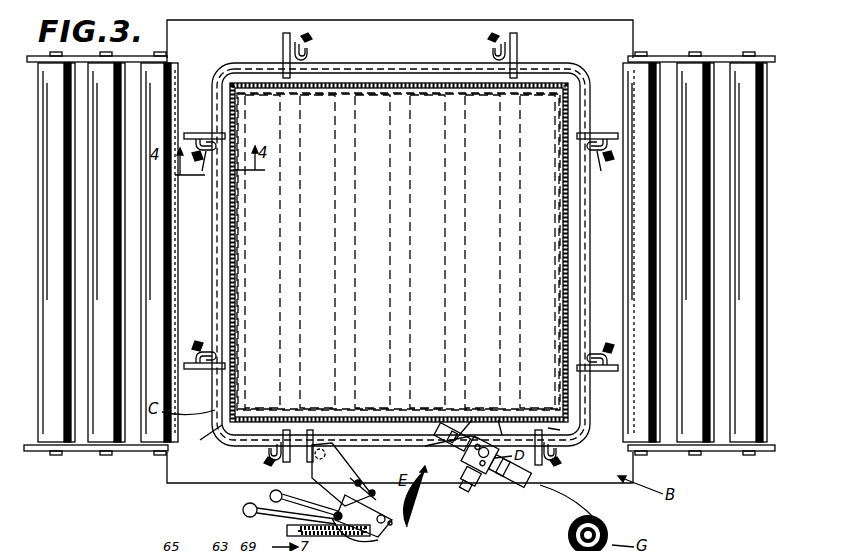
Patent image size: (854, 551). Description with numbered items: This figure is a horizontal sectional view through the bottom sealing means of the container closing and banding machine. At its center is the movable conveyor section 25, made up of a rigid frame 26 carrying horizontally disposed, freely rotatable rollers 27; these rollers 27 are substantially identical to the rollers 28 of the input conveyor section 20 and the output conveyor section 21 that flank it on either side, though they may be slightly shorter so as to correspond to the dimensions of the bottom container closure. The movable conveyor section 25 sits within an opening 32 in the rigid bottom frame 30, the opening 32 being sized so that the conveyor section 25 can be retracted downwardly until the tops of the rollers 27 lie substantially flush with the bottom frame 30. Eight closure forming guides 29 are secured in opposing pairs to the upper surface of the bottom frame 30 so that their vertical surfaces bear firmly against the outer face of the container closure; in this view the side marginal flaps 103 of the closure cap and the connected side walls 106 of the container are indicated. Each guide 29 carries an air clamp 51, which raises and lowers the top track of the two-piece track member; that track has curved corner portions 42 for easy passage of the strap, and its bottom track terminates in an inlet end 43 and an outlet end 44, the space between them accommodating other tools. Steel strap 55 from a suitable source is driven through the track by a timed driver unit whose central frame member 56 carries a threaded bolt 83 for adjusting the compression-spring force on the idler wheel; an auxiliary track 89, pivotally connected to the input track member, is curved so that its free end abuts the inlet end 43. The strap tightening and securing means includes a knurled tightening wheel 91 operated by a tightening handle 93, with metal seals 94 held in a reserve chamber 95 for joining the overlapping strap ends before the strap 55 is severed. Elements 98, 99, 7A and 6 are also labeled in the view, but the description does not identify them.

The bottom frame 30 is at (178, 482).
The opening 32 is at (198, 440).
The output conveyor portion 21 is at (78, 452).
The input conveyor section 20 is at (698, 455).
The rollers 28 is at (90, 198).
The curved corner portions 42 is at (218, 72).
The side walls 106 is at (232, 260).
The side marginal flaps 103 is at (380, 68).
The movable conveyor section 25 is at (404, 410).
The rollers 27 is at (465, 292).
The closure forming guides 29 is at (283, 46).
The air clamp 51 is at (314, 48).
The inlet end 43 is at (304, 455).
The lever plate 98 is at (336, 450).
The pivot 99 is at (329, 469).
The knurled tightening wheel 91 is at (366, 478).
The auxiliary track 89 is at (402, 448).
The metal seals 94 is at (394, 528).
The tightening handle 93 is at (270, 497).
The reserve chamber 95 is at (288, 528).
The central frame member 56 is at (468, 478).
The threaded bolt 83 is at (478, 500).
The tube 7A is at (510, 500).
The outlet end 44 is at (500, 418).
The steel strap 55 is at (480, 418).
The rigid frame 26 is at (560, 430).
The wheel 6 is at (608, 530).